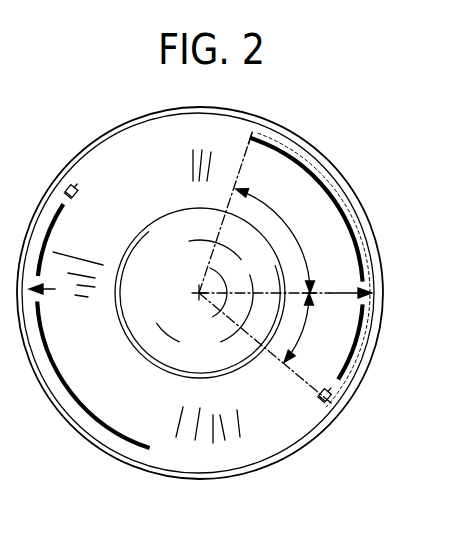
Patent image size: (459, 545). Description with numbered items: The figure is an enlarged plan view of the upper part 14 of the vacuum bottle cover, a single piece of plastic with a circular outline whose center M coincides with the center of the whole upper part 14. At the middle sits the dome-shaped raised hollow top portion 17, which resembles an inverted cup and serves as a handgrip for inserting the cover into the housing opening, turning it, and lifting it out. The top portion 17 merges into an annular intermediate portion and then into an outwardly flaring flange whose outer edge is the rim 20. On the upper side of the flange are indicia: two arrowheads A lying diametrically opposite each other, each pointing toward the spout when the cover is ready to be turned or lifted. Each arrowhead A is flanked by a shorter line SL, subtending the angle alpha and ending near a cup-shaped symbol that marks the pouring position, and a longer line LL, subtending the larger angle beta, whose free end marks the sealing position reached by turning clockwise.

The upper part 14 is at (53, 157).
The raised hollow top portion 17 is at (172, 253).
The rim 20 is at (263, 466).
The longer line LL is at (285, 147).
The shorter line SL is at (58, 217).
The arrowhead A is at (371, 285).
The center M is at (199, 294).